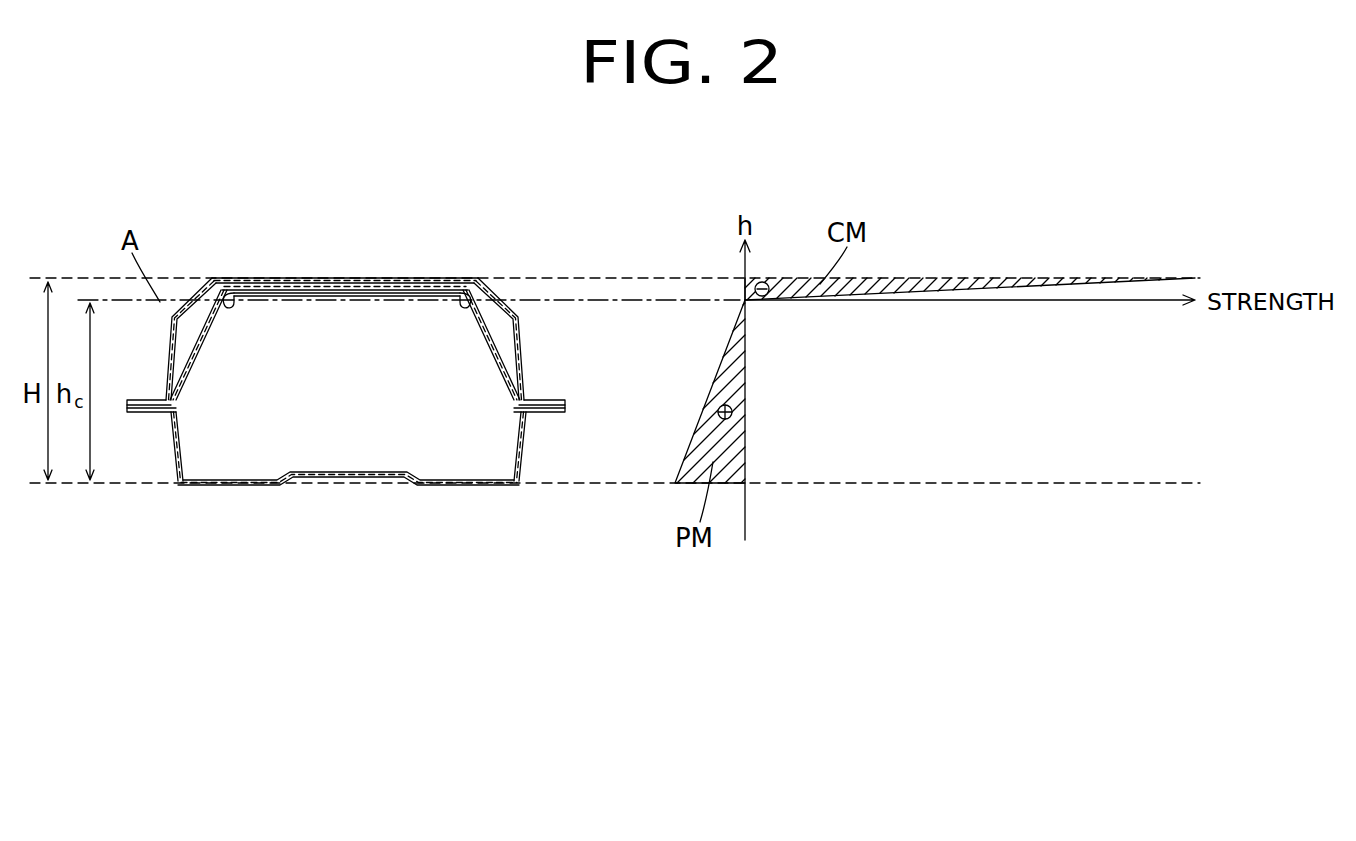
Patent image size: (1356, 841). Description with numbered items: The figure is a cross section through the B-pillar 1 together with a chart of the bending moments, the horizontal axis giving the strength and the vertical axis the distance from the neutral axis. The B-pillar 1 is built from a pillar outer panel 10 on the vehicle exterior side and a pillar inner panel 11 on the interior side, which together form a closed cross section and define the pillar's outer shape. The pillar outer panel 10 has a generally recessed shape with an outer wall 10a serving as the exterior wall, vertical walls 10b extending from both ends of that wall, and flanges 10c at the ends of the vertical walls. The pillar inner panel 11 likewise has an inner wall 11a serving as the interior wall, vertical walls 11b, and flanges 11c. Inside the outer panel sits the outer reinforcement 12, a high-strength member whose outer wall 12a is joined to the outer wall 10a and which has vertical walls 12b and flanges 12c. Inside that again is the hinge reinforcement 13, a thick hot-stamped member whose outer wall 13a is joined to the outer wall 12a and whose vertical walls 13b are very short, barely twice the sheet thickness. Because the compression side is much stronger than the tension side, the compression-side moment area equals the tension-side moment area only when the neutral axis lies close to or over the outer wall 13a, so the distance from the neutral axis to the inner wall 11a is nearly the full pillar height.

The B-pillar 1 is at (437, 225).
The pillar outer panel 10 is at (538, 334).
The outer wall 10a is at (340, 278).
The vertical walls 10b is at (172, 332).
The flanges 10c is at (140, 400).
The pillar inner panel 11 is at (537, 455).
The inner wall 11a is at (448, 488).
The vertical walls 11b is at (174, 448).
The flanges 11c is at (145, 412).
The outer reinforcement 12 is at (510, 366).
The outer wall 12a is at (293, 288).
The vertical walls 12b is at (190, 360).
The flanges 12c is at (178, 412).
The hinge reinforcement 13 is at (410, 309).
The outer wall 13a is at (343, 297).
The vertical walls 13b is at (227, 307).